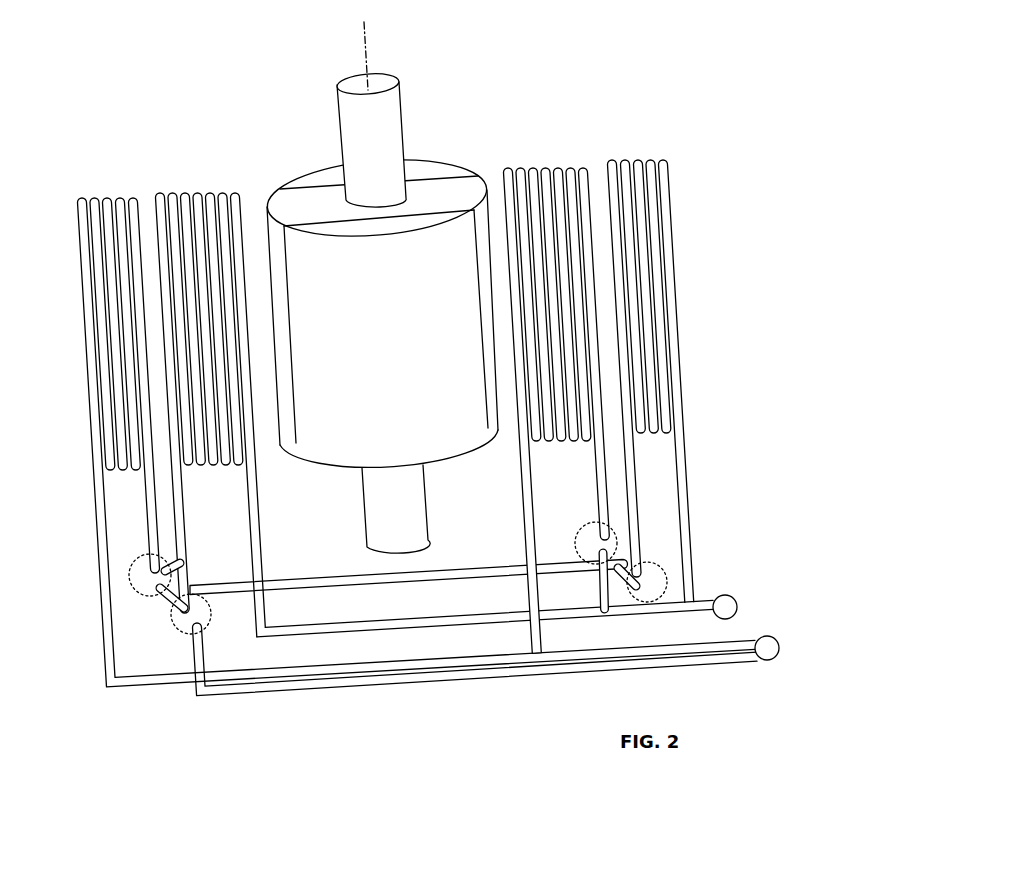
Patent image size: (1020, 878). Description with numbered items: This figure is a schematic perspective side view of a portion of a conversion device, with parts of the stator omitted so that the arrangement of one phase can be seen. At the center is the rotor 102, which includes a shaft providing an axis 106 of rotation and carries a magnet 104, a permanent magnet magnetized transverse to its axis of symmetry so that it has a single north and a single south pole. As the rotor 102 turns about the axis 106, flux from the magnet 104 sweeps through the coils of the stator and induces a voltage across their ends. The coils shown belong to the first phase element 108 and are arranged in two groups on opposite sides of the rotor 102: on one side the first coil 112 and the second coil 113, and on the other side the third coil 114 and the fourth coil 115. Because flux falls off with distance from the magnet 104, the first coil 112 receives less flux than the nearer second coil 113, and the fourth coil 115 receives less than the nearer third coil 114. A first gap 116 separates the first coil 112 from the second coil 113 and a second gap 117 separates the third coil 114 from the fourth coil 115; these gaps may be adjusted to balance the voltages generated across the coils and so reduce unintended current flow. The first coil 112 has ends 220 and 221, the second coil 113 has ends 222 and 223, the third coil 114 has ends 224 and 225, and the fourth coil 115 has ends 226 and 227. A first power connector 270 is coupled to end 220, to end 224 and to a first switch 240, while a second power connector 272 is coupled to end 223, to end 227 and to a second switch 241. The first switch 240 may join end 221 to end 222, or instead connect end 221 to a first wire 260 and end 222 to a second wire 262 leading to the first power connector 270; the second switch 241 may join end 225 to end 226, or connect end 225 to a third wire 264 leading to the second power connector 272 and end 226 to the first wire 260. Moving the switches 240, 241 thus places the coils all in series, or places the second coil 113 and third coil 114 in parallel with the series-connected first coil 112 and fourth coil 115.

The rotor 102 is at (447, 112).
The magnet 104 is at (272, 197).
The axis of rotation 106 is at (368, 56).
The first phase element 108 is at (641, 332).
The first coil 112 is at (658, 368).
The second coil 113 is at (562, 334).
The third coil 114 is at (199, 386).
The fourth coil 115 is at (111, 366).
The first gap 116 is at (607, 158).
The second gap 117 is at (155, 184).
The end of first coil 220 is at (690, 499).
The end of first coil 221 is at (642, 496).
The end of second coil 222 is at (594, 497).
The end of second coil 223 is at (524, 500).
The end of third coil 224 is at (266, 553).
The end of third coil 225 is at (194, 526).
The end of fourth coil 226 is at (148, 530).
The end of fourth coil 227 is at (100, 563).
The first switch 240 is at (602, 574).
The second switch 241 is at (172, 597).
The first wire 260 is at (324, 579).
The second wire 262 is at (601, 620).
The third wire 264 is at (235, 693).
The first power connector 270 is at (732, 598).
The second power connector 272 is at (773, 640).